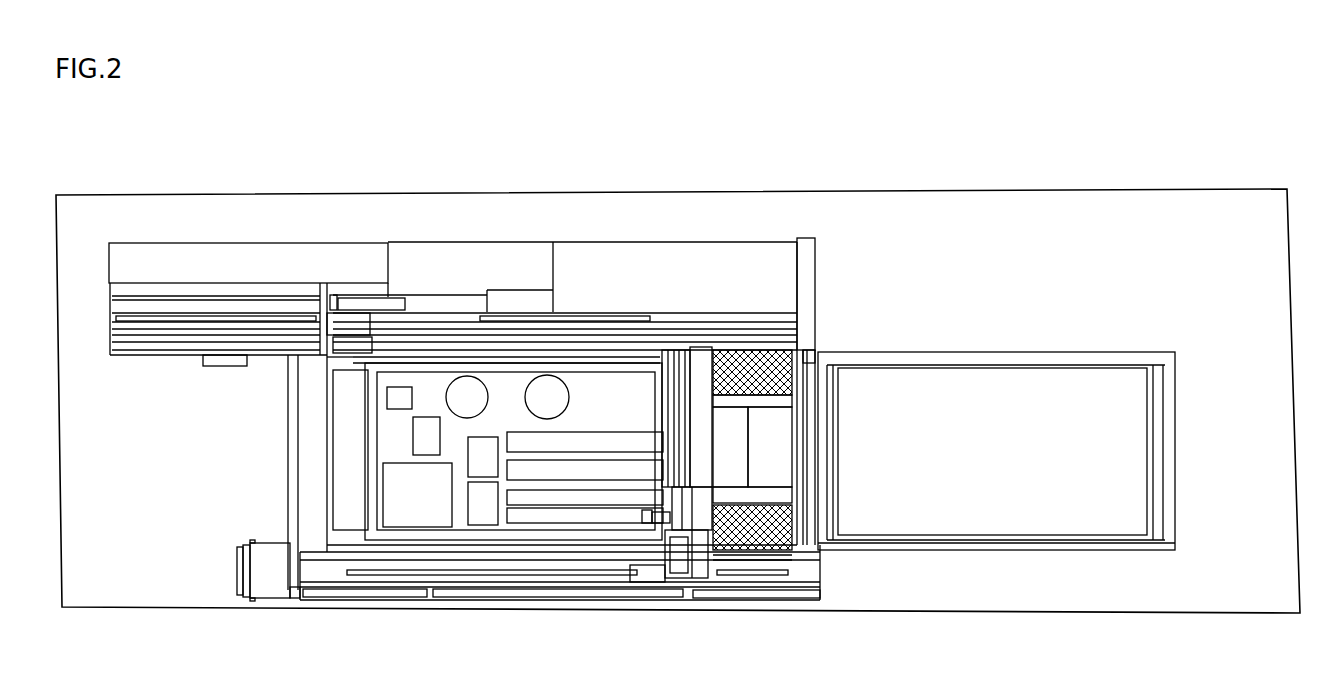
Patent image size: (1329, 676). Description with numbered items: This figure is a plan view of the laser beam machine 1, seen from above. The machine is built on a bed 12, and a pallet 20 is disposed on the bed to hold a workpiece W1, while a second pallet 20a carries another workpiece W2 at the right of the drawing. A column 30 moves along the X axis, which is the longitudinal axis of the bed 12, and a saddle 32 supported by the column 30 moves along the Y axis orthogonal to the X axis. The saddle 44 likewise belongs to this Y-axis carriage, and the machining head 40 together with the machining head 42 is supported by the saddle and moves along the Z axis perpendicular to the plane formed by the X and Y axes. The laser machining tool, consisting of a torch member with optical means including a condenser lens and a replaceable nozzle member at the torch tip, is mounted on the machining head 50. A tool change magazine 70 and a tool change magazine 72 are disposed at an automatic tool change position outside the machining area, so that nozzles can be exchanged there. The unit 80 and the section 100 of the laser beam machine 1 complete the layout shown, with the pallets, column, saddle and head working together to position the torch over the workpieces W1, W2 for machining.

The laser beam machine 1 is at (845, 166).
The bed 12 is at (983, 543).
The pallet 20 is at (463, 522).
The pallet 20a is at (1095, 525).
The column 30 is at (683, 577).
The saddle 32 is at (647, 573).
The machining head 40 is at (718, 548).
The machining head 42 is at (683, 543).
The saddle 44 is at (676, 343).
The machining head 50 is at (640, 517).
The tool change magazine 70 is at (312, 262).
The tool change magazine 72 is at (736, 252).
The laser beam machine 80 is at (270, 590).
The laser beam machine 100 is at (342, 430).
The workpiece W1 is at (603, 392).
The workpiece W2 is at (987, 393).